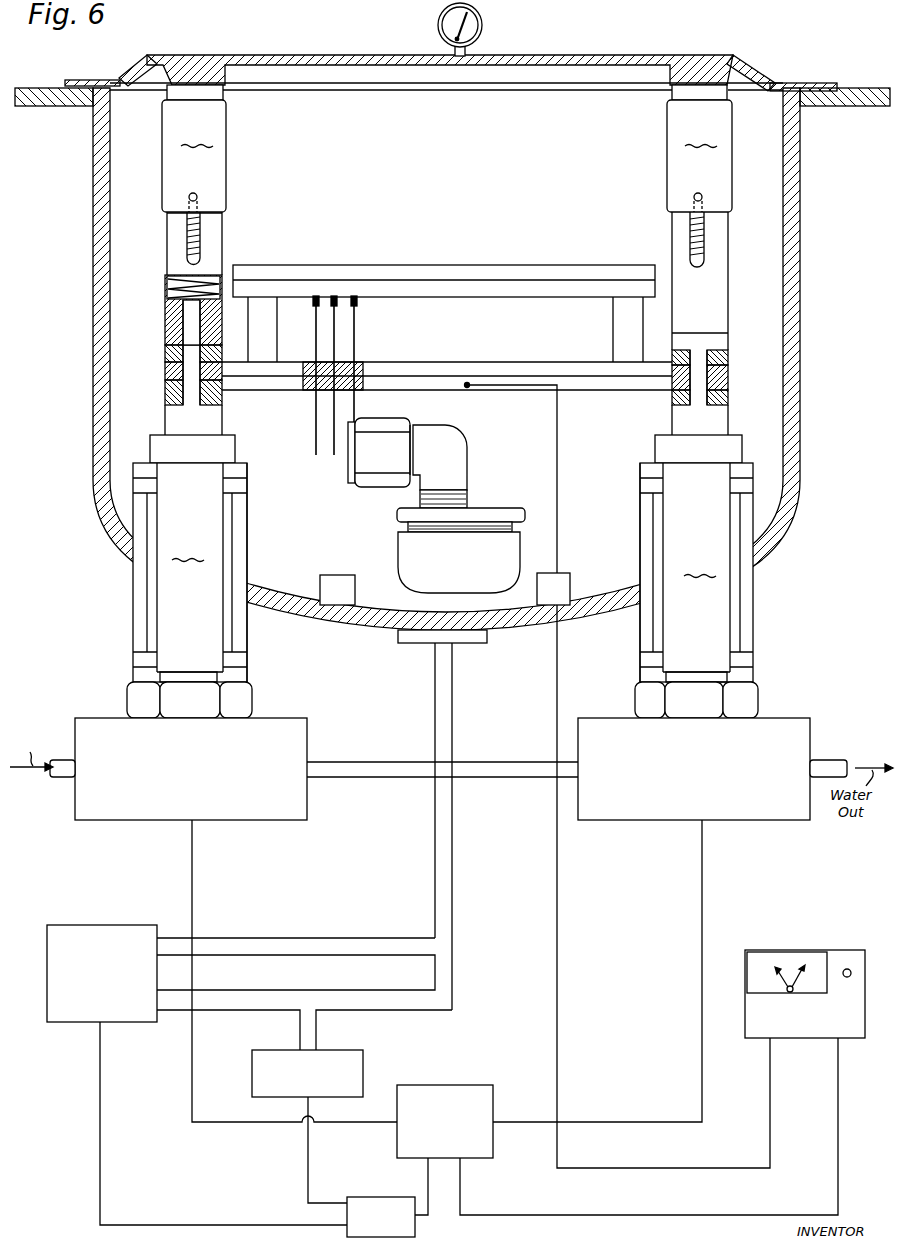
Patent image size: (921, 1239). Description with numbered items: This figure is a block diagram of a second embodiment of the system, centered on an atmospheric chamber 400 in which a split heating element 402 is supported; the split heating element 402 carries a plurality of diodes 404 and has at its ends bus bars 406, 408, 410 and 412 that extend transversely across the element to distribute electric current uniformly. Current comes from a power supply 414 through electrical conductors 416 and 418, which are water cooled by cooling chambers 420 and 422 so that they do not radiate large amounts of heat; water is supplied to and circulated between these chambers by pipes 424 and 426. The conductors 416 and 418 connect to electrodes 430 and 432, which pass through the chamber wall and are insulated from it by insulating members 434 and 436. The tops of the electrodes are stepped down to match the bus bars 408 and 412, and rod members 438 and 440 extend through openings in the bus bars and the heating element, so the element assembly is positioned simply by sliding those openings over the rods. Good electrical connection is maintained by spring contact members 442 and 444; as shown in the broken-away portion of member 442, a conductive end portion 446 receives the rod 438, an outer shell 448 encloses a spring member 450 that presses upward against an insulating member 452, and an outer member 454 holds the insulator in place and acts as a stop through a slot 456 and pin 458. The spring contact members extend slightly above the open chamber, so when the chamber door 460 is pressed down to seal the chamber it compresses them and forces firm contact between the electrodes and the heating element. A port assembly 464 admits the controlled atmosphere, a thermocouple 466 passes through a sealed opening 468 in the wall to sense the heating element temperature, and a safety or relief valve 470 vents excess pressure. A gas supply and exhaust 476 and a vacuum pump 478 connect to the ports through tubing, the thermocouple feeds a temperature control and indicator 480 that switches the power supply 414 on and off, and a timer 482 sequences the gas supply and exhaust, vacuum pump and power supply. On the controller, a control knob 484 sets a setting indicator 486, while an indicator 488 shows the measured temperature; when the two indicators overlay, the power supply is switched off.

The atmospheric chamber 400 is at (757, 160).
The split heating element 402 is at (518, 372).
The diodes 404 is at (335, 340).
The bus bar 406 is at (166, 350).
The bus bar 408 is at (166, 397).
The bus bar 410 is at (722, 353).
The bus bar 412 is at (727, 398).
The power supply 414 is at (493, 1092).
The electrical conductor 416 is at (192, 873).
The electrical conductor 418 is at (702, 877).
The cooling chamber 420 is at (300, 730).
The cooling chamber 422 is at (800, 730).
The pipe 424 is at (62, 780).
The pipe 426 is at (527, 763).
The electrode 430 is at (214, 590).
The electrode 432 is at (678, 590).
The insulating member 434 is at (247, 558).
The insulating member 436 is at (640, 548).
The rod member 438 is at (193, 380).
The rod member 440 is at (697, 385).
The spring contact member 442 is at (204, 274).
The spring contact member 444 is at (716, 274).
The conductive end portion 446 is at (166, 313).
The outer shell 448 is at (213, 237).
The spring member 450 is at (188, 214).
The insulating member 452 is at (213, 97).
The outer member 454 is at (200, 161).
The slot 456 is at (200, 220).
The pin 458 is at (199, 196).
The chamber door 460 is at (703, 57).
The port assembly 464 is at (465, 453).
The thermocouple 466 is at (557, 443).
The sealed opening 468 is at (570, 587).
The safety or relief valve 470 is at (342, 577).
The gas supply and exhaust 476 is at (150, 900).
The vacuum pump 478 is at (360, 1060).
The temperature control and indicator 480 is at (822, 978).
The timer 482 is at (407, 1197).
The control knob 484 is at (847, 972).
The setting indicator 486 is at (803, 968).
The indicator 488 is at (778, 970).